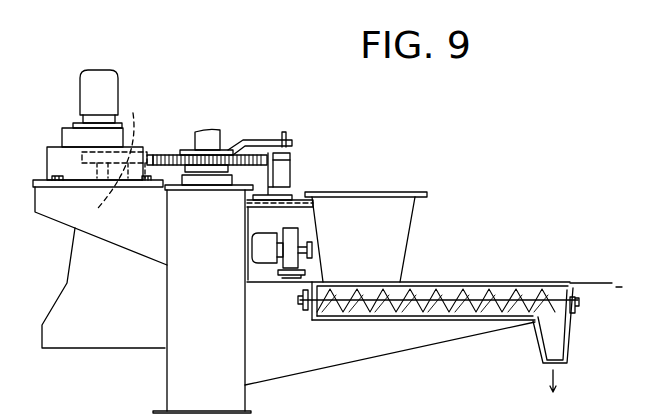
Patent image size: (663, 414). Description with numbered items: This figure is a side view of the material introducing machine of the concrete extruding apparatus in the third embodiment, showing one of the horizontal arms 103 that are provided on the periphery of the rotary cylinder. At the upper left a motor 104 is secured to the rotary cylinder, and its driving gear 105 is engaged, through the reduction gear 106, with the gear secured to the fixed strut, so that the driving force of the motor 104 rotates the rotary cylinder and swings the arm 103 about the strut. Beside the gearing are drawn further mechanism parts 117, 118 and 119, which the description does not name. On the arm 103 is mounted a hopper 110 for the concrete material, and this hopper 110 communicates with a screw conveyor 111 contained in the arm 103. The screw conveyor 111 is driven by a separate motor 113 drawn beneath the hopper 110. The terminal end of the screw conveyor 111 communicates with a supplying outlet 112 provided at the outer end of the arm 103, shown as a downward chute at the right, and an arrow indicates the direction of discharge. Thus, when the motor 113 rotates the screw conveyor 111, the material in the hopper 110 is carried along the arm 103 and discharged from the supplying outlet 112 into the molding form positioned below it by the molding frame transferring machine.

The horizontal arm 103 is at (392, 333).
The motor 104 is at (99, 85).
The driving gear 105 is at (92, 217).
The reduction gear 106 is at (132, 151).
The hopper 110 is at (390, 214).
The screw conveyor 111 is at (176, 294).
The supplying outlet 112 is at (210, 138).
The motor 113 is at (270, 255).
The rack 117 is at (182, 150).
The switch 118 is at (280, 168).
The bracket 119 is at (260, 140).